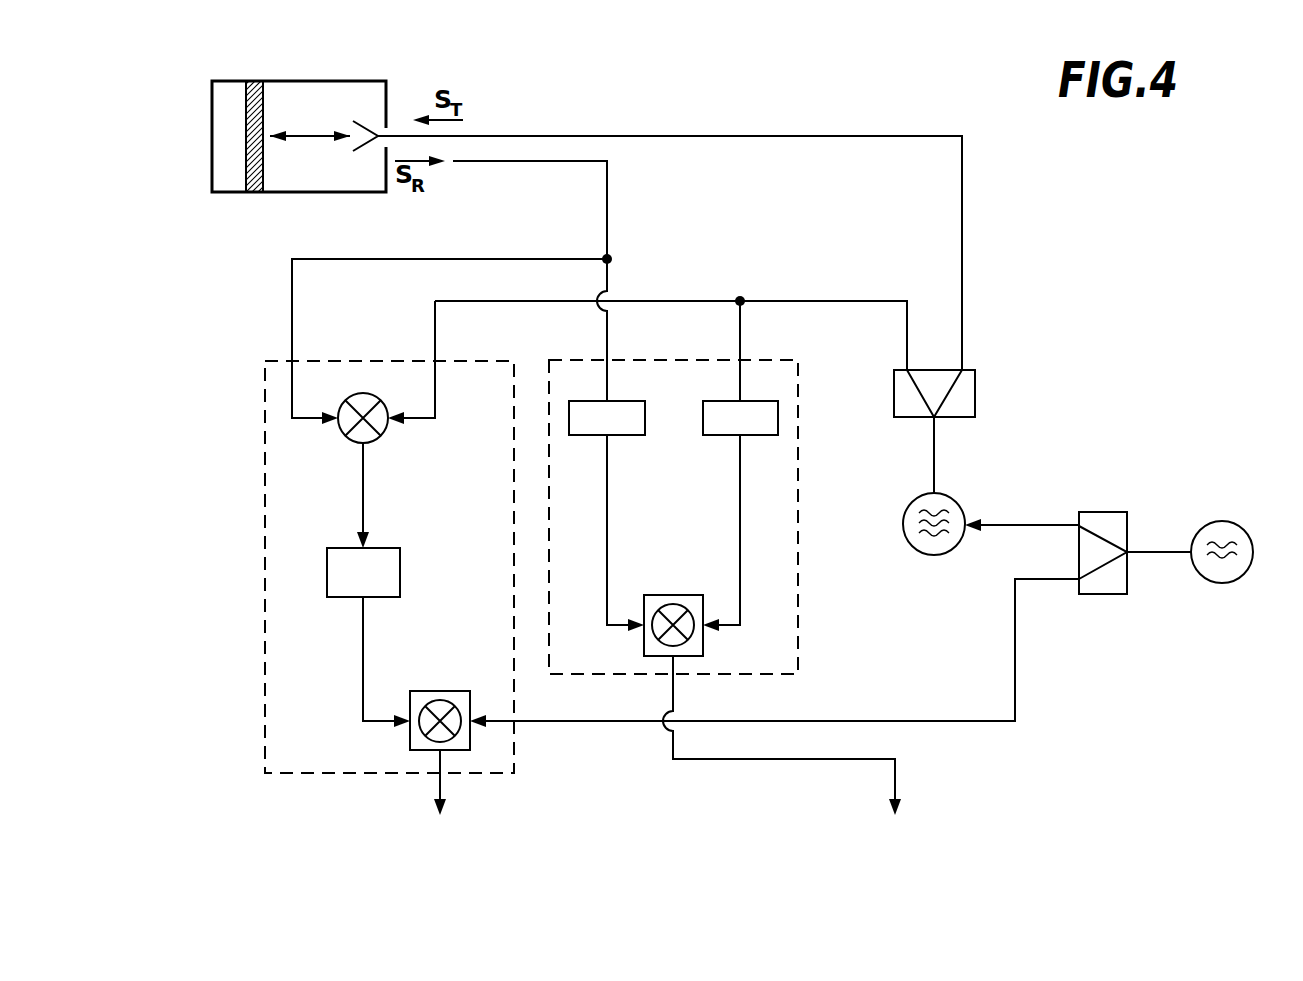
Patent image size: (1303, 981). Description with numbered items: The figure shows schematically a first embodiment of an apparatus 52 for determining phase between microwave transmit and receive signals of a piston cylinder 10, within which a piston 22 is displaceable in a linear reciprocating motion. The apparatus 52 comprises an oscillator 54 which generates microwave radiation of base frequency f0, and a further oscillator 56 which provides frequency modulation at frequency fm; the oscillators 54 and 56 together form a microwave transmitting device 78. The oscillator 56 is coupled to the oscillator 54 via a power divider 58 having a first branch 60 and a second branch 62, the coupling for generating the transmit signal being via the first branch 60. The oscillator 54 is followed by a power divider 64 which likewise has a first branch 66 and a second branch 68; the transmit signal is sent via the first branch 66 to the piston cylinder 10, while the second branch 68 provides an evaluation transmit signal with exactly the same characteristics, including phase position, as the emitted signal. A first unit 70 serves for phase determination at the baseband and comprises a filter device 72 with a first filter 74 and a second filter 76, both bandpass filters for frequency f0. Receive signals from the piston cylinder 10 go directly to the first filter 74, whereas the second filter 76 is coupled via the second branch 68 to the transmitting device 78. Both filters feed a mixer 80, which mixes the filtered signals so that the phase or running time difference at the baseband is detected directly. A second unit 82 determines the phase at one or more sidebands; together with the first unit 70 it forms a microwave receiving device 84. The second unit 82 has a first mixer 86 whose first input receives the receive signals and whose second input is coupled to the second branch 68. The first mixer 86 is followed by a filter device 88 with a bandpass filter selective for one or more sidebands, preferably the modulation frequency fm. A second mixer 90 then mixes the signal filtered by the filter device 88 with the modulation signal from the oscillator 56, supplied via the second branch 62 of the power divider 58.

The piston cylinder 10 is at (343, 68).
The piston 22 is at (253, 81).
The apparatus 52 is at (692, 110).
The oscillator 54 is at (932, 549).
The further oscillator 56 is at (1221, 570).
The power divider 58 is at (1115, 527).
The first branch 60 is at (1097, 530).
The second branch 62 is at (1097, 575).
The power divider 64 is at (968, 381).
The first branch 66 is at (955, 397).
The second branch 68 is at (914, 396).
The first unit 70 is at (812, 634).
The filter device 72 is at (780, 346).
The first filter 74 is at (620, 425).
The second filter 76 is at (722, 422).
The microwave transmitting device 78 is at (1034, 472).
The mixer 80 is at (652, 640).
The second unit 82 is at (320, 787).
The microwave receiving device 84 is at (264, 680).
The first mixer 86 is at (347, 427).
The filter device 88 is at (385, 583).
The second mixer 90 is at (460, 738).